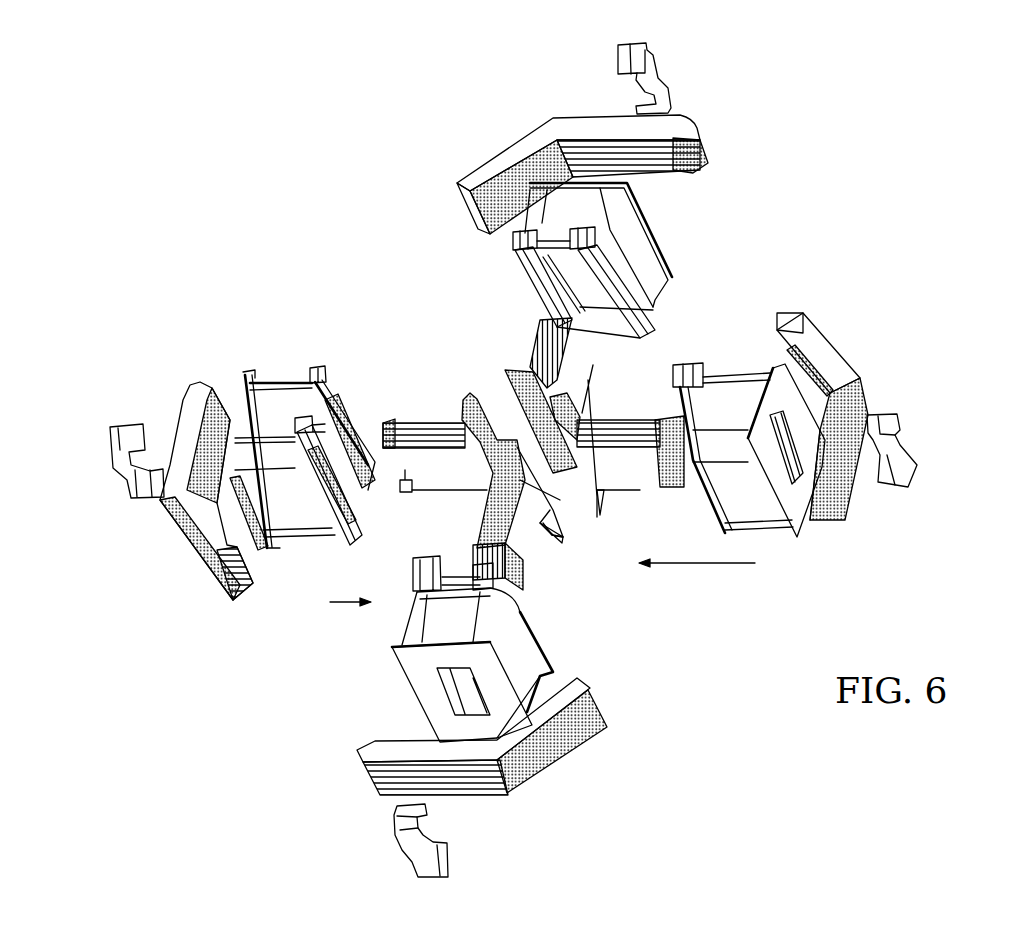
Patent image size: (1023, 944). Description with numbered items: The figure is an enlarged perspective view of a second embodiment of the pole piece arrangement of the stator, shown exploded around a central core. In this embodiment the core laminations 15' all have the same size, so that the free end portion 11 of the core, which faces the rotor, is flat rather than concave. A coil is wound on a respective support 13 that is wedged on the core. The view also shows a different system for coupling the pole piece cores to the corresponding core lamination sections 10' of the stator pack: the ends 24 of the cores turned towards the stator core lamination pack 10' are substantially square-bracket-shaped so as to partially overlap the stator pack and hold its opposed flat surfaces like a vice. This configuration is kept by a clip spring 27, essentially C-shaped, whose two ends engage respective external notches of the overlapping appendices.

The core lamination section of the stator pack 10' is at (527, 460).
The free end portion of the core 11 is at (500, 387).
The support 13 is at (637, 256).
The core laminations 15' is at (514, 440).
The ends of the cores 24 is at (388, 458).
The clip spring 27 is at (115, 425).